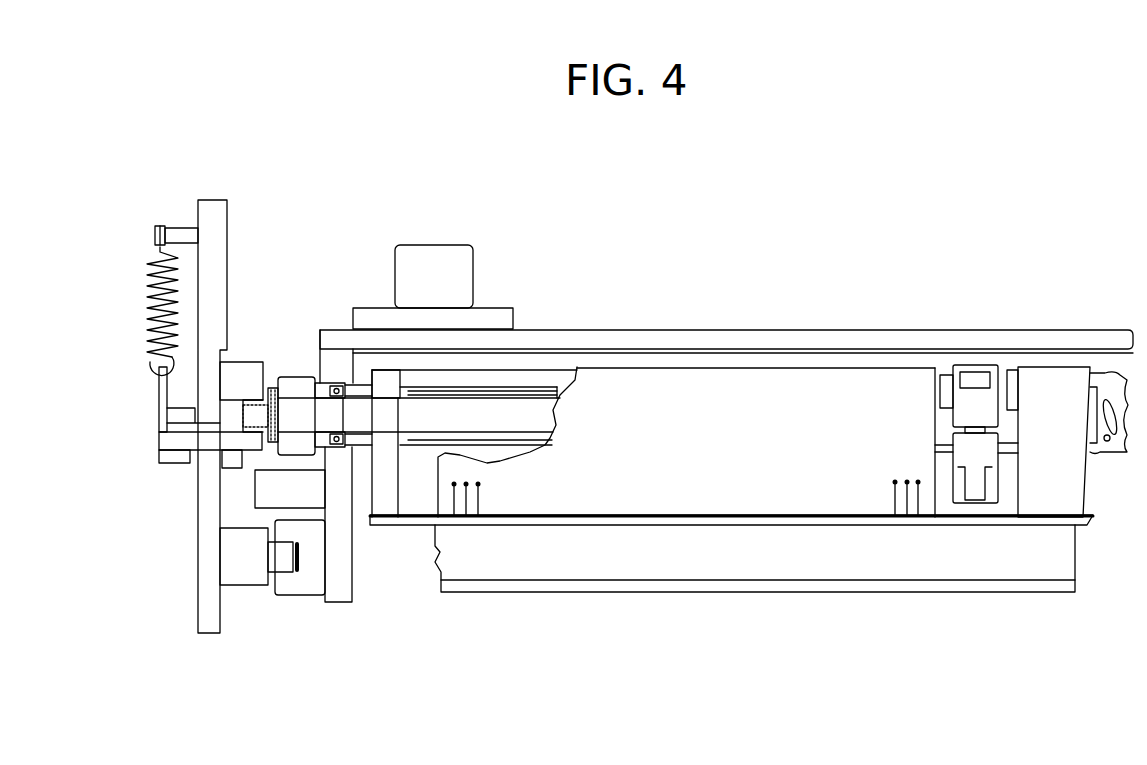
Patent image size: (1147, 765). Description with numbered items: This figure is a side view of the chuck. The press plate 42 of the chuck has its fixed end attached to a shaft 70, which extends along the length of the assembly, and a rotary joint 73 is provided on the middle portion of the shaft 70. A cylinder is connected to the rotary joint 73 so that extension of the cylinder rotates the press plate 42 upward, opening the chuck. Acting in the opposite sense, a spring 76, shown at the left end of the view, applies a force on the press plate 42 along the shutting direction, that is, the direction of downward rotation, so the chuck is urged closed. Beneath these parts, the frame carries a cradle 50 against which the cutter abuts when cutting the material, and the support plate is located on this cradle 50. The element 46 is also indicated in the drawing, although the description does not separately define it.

The press plate 42 is at (803, 380).
The bottom plate 46 is at (742, 527).
The cradle 50 is at (862, 562).
The shaft 70 is at (538, 400).
The rotary joint 73 is at (988, 455).
The spring 76 is at (155, 280).